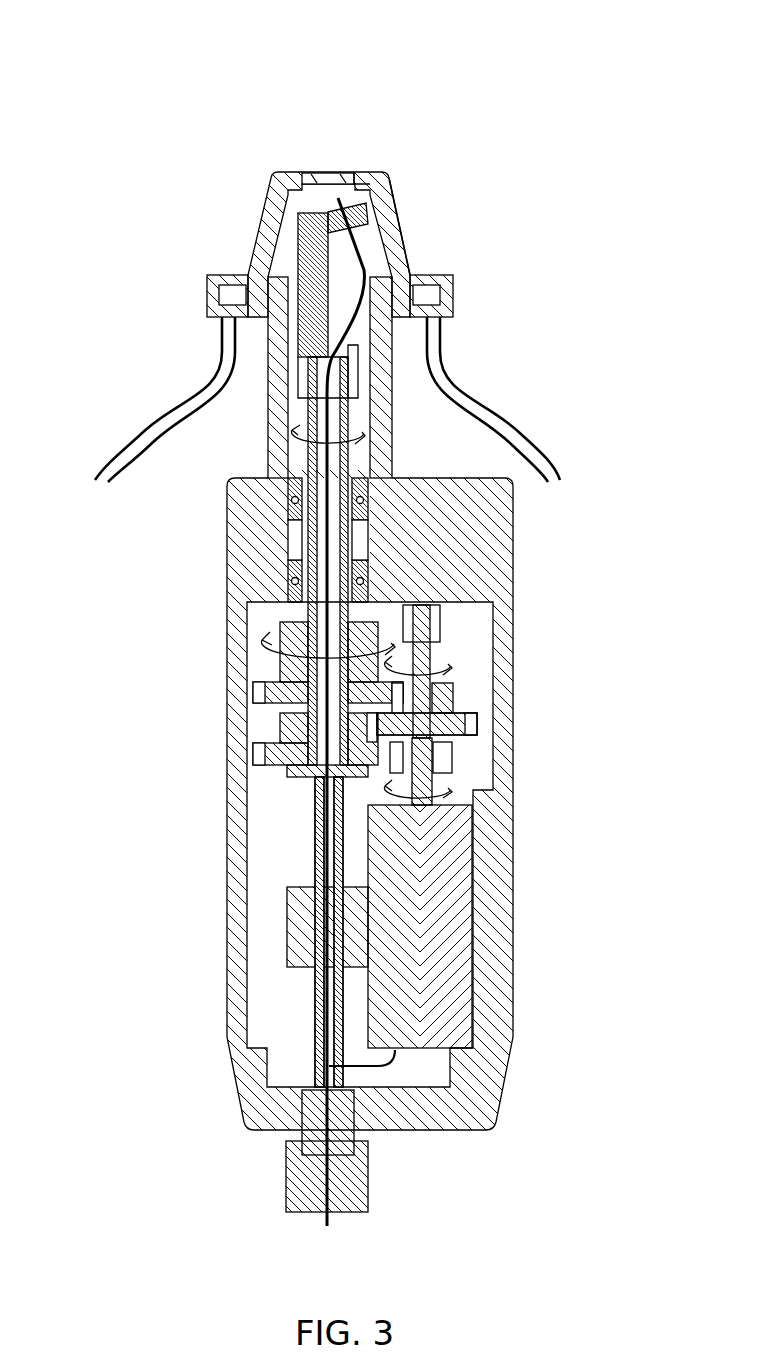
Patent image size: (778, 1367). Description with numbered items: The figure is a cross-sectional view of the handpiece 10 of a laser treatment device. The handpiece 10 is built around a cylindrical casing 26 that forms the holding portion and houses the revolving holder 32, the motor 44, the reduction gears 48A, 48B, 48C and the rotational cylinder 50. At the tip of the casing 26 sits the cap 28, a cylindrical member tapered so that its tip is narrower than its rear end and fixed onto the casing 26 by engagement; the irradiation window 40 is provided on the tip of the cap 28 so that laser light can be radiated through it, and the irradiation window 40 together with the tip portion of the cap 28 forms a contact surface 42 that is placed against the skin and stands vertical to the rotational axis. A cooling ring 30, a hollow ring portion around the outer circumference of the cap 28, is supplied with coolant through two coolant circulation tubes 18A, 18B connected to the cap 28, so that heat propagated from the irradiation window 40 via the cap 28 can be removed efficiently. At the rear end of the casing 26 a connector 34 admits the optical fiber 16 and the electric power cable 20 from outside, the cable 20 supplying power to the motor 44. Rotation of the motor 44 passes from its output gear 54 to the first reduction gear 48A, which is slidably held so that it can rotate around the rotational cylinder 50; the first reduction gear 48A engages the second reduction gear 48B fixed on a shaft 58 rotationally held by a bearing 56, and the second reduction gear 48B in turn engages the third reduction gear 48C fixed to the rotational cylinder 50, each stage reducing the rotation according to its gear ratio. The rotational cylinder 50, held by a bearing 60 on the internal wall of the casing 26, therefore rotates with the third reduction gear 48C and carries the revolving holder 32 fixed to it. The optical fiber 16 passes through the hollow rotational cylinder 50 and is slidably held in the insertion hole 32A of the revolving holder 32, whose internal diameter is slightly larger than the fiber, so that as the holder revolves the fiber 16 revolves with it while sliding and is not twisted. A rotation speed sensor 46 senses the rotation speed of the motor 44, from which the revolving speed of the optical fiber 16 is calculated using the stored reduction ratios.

The handpiece 10 is at (573, 123).
The optical fiber 16 is at (400, 223).
The coolant circulation tube 18A is at (467, 403).
The coolant circulation tube 18B is at (187, 410).
The electric power cable 20 is at (395, 1060).
The casing 26 is at (470, 547).
The cap 28 is at (253, 200).
The cooling ring 30 is at (212, 295).
The revolving holder 32 is at (308, 255).
The insertion hole 32A is at (372, 193).
The connector 34 is at (298, 1190).
The irradiation window 40 is at (320, 178).
The contact surface 42 is at (363, 173).
The motor 44 is at (424, 897).
The rotation speed sensor 46 is at (295, 920).
The first reduction gear 48A is at (262, 752).
The second reduction gear 48B is at (477, 718).
The third reduction gear 48C is at (262, 697).
The rotational cylinder 50 is at (308, 462).
The output gear 54 is at (450, 755).
The bearing 56 is at (440, 623).
The shaft 58 is at (440, 642).
The bearing 60 is at (290, 572).